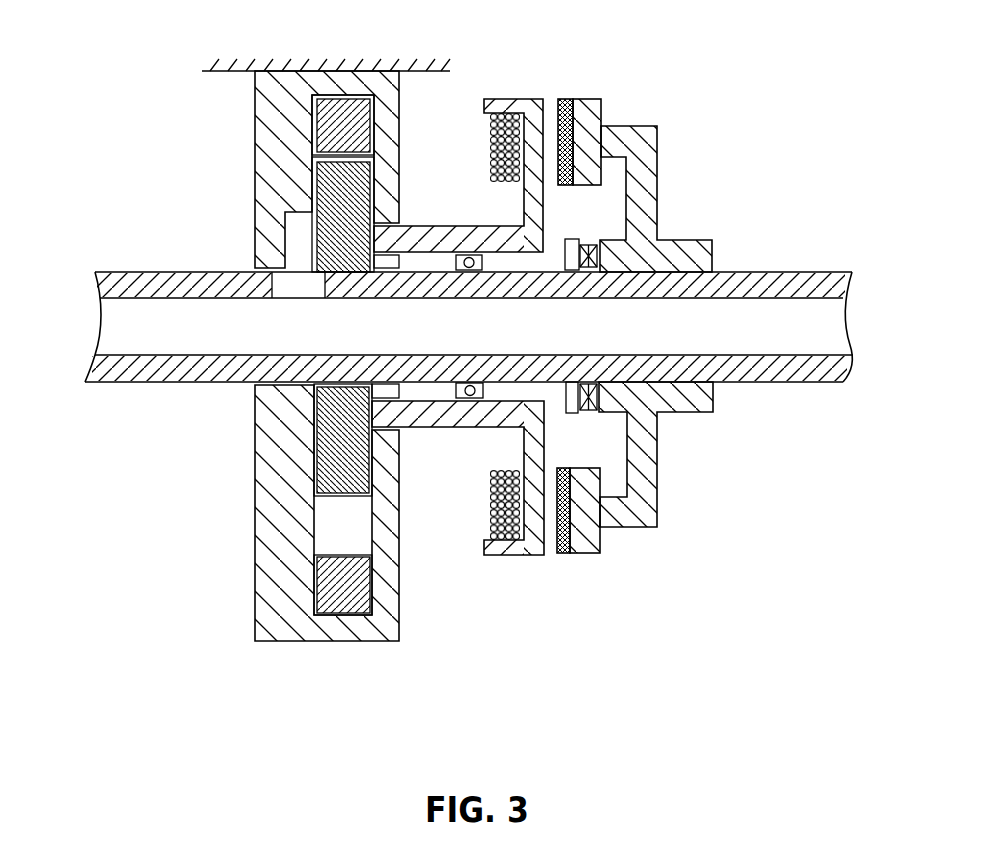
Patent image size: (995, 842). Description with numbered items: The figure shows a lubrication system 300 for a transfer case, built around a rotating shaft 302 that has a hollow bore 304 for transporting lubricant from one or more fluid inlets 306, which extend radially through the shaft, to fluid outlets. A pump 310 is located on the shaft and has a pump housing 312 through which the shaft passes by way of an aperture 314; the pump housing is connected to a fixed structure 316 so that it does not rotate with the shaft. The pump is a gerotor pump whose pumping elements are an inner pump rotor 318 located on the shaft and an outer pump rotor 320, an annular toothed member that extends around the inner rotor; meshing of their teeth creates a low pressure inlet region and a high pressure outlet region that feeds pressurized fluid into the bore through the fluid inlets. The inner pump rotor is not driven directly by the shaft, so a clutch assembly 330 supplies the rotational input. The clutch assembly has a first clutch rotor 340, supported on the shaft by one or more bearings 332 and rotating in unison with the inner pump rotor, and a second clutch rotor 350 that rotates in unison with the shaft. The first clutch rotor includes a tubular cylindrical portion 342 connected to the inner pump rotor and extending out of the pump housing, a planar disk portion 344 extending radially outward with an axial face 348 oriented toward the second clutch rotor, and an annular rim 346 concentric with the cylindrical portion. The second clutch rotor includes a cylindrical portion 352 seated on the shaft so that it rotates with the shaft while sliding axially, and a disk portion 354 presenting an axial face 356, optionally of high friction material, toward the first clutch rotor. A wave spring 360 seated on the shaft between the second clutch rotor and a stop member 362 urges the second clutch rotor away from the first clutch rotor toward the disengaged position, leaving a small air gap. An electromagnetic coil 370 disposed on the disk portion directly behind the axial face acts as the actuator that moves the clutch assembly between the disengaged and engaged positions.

The lubrication system 300 is at (128, 92).
The shaft 302 is at (469, 297).
The hollow bore 304 is at (627, 333).
The fluid inlet 306 is at (289, 300).
The pump 310 is at (238, 553).
The pump housing 312 is at (255, 110).
The aperture 314 is at (263, 270).
The fixed structure 316 is at (203, 72).
The inner pump rotor 318 is at (327, 197).
The outer pump rotor 320 is at (323, 142).
The clutch assembly 330 is at (645, 70).
The bearing 332 is at (480, 262).
The first clutch rotor 340 is at (458, 146).
The cylindrical portion 342 is at (507, 99).
The disk portion 344 is at (458, 513).
The annular rim 346 is at (500, 555).
The axial face 348 is at (547, 107).
The second clutch rotor 350 is at (583, 99).
The cylindrical portion 352 is at (698, 240).
The disk portion 354 is at (617, 112).
The axial face 356 is at (550, 177).
The wave spring 360 is at (585, 412).
The stop member 362 is at (572, 413).
The electromagnetic coil 370 is at (490, 152).